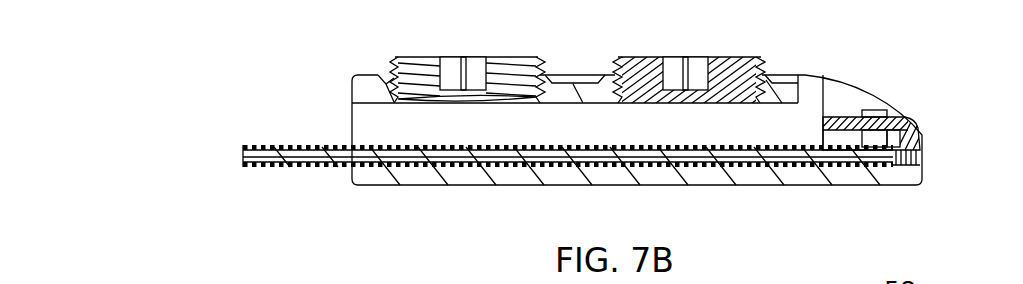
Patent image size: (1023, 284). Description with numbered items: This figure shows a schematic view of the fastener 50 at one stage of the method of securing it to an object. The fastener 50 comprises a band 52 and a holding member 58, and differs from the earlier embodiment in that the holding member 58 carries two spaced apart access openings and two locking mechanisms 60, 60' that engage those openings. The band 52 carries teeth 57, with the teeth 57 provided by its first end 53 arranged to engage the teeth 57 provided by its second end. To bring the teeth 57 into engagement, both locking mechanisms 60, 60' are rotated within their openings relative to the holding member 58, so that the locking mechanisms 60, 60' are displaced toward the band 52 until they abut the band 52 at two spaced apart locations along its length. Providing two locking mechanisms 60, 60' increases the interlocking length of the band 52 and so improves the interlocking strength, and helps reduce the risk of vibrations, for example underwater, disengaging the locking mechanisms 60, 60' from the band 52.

The fastener 50 is at (912, 70).
The band 52 is at (243, 150).
The first end 53 is at (880, 168).
The teeth 57 is at (322, 167).
The holding member 58 is at (362, 74).
The locking mechanism 60 is at (467, 56).
The locking mechanism 60' is at (687, 53).